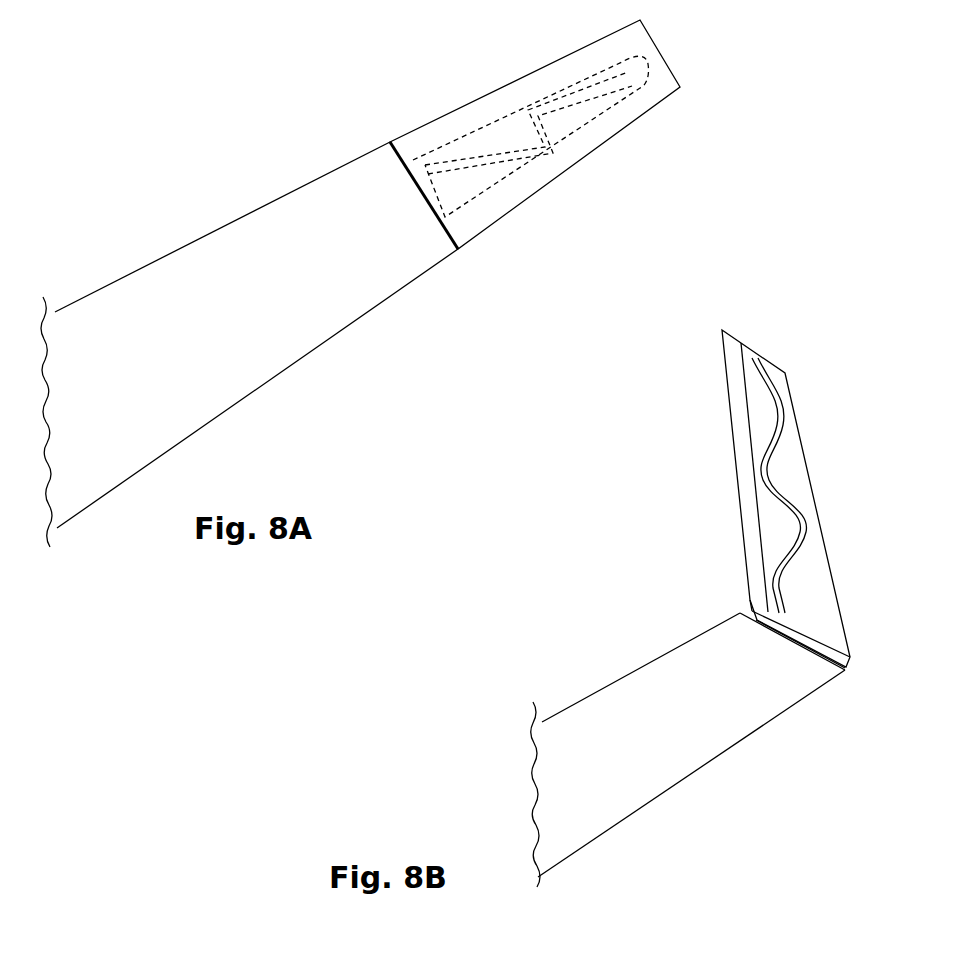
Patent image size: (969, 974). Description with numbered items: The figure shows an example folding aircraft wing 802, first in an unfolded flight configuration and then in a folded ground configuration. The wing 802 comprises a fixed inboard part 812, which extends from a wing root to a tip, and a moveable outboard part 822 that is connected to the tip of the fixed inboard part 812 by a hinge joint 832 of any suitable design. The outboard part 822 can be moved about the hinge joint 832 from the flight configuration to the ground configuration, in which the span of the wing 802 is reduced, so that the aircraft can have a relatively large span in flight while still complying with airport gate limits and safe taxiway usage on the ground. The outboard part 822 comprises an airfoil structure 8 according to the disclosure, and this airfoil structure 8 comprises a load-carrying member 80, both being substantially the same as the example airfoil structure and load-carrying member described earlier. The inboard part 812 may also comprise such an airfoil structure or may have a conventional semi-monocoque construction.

In FIG. 8A, the airfoil structure 8 is at (481, 70).
In FIG. 8B, the airfoil structure 8 is at (702, 462).
In FIG. 8A, the load-carrying member 80 is at (638, 85).
In FIG. 8B, the load-carrying member 80 is at (780, 437).
In FIG. 8A, the folding aircraft wing 802 is at (210, 99).
In FIG. 8B, the folding aircraft wing 802 is at (590, 529).
In FIG. 8A, the fixed inboard part 812 is at (125, 317).
In FIG. 8B, the fixed inboard part 812 is at (613, 725).
In FIG. 8A, the moveable outboard part 822 is at (575, 162).
In FIG. 8B, the moveable outboard part 822 is at (803, 502).
In FIG. 8A, the hinge joint 832 is at (425, 200).
In FIG. 8B, the hinge joint 832 is at (794, 640).